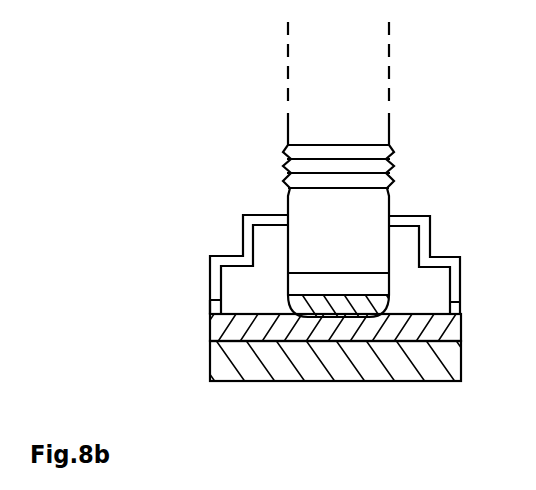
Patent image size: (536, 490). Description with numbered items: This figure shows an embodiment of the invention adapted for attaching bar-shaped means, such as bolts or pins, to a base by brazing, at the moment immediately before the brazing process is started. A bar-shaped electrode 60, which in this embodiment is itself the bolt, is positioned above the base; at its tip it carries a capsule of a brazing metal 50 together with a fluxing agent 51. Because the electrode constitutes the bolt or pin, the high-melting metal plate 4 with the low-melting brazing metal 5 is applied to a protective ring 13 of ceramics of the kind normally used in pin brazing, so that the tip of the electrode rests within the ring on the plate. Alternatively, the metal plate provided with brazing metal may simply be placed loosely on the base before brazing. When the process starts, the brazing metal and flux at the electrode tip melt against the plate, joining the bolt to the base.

The bar-shaped electrode 60 is at (381, 128).
The capsule of brazing metal 50 is at (290, 294).
The protective ring 13 is at (450, 258).
The high-melting metal plate 4 is at (447, 332).
The low-melting brazing metal 5 is at (450, 366).
The fluxing agent 51 is at (211, 315).